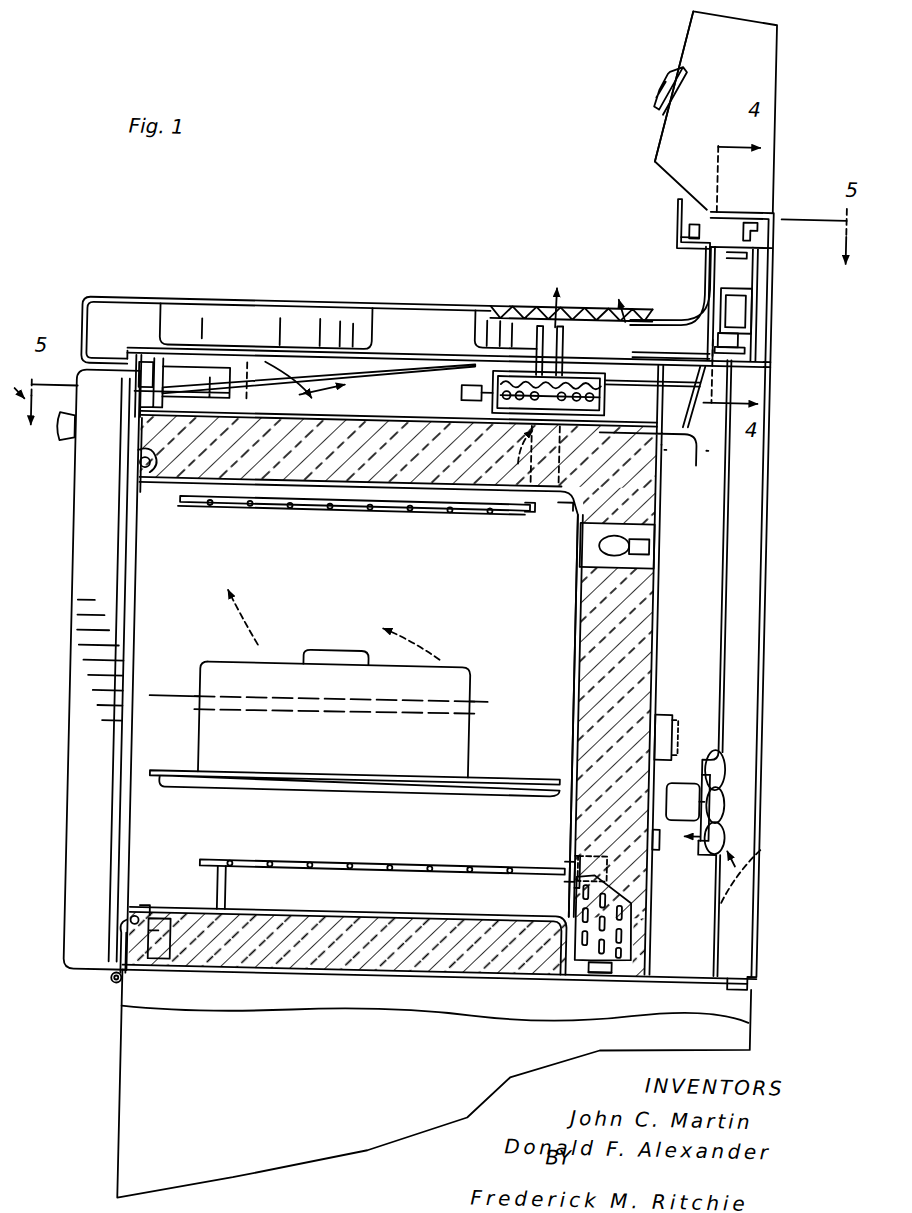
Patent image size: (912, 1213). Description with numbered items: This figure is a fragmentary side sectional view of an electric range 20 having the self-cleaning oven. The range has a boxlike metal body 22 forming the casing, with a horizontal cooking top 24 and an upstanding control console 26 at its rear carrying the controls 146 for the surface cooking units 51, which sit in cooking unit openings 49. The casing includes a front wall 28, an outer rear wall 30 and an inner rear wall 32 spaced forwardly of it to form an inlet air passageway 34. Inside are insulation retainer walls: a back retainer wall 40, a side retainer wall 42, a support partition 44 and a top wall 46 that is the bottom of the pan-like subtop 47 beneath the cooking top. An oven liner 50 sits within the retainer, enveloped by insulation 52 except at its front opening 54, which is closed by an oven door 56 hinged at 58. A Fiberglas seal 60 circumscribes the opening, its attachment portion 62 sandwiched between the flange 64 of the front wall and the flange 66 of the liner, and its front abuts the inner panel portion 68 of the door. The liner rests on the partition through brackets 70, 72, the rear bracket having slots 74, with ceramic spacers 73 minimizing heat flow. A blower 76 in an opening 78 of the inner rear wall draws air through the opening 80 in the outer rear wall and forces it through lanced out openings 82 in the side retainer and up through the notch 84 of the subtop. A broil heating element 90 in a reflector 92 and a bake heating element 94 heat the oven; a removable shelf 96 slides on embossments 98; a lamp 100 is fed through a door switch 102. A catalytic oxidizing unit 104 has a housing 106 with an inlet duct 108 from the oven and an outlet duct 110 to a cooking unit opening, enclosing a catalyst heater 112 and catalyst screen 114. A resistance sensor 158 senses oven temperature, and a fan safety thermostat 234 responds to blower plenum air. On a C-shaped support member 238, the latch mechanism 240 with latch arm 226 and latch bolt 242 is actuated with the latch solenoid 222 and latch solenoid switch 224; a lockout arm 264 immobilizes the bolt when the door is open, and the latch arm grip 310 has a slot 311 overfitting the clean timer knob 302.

The electric range 20 is at (765, 35).
The metal body 22 is at (78, 323).
The cooking top 24 is at (392, 305).
The control console 26 is at (653, 128).
The front wall 28 is at (67, 434).
The outer rear wall 30 is at (764, 605).
The inner rear wall 32 is at (725, 626).
The inlet air passageway 34 is at (745, 841).
The back retainer wall 40 is at (660, 620).
The side retainer wall 42 is at (698, 559).
The support partition 44 is at (358, 980).
The top wall 46 is at (380, 420).
The subtop member 47 is at (693, 475).
The cooking unit opening 49 is at (174, 305).
The oven liner 50 is at (574, 637).
The surface cooking unit 51 is at (483, 311).
The insulation 52 is at (601, 692).
The front opening 54 is at (124, 579).
The oven door 56 is at (87, 726).
The hinge 58 is at (120, 993).
The Fiberglas seal 60 is at (136, 919).
The attachment portion 62 is at (151, 912).
The flange 64 is at (134, 469).
The flange 66 is at (148, 487).
The inner panel portion 68 is at (129, 610).
The bracket 70 is at (185, 946).
The bracket 72 is at (597, 962).
The ceramic spacer 73 is at (171, 921).
The slots 74 is at (622, 931).
The blower 76 is at (704, 792).
The opening 78 is at (733, 769).
The opening 80 is at (746, 898).
The lanced out openings 82 is at (672, 715).
The notch 84 is at (276, 344).
The broil heating element 90 is at (347, 512).
The reflector 92 is at (187, 511).
The bake heating element 94 is at (417, 867).
The removable shelf 96 is at (175, 776).
The embossments 98 is at (365, 792).
The lamp 100 is at (628, 536).
The door switch 102 is at (139, 387).
The catalytic oxidizing unit 104 is at (603, 394).
The housing 106 is at (601, 406).
The inlet duct 108 is at (512, 511).
The outlet duct 110 is at (541, 343).
The catalyst heater 112 is at (484, 397).
The catalyst screen 114 is at (599, 384).
The controls 146 is at (647, 70).
The wound wire resistance sensor 158 is at (557, 511).
The latch solenoid 222 is at (733, 305).
The latch solenoid switch 224 is at (742, 211).
The latch arm 226 is at (688, 246).
The fan safety thermostat 234 is at (665, 845).
The C-shaped support member 238 is at (751, 251).
The latch mechanism 240 is at (732, 265).
The latch bolt 242 is at (399, 373).
The lockout arm 264 is at (220, 403).
The clean timer knob 302 is at (680, 227).
The latch arm grip 310 is at (668, 200).
The slot 311 is at (671, 233).